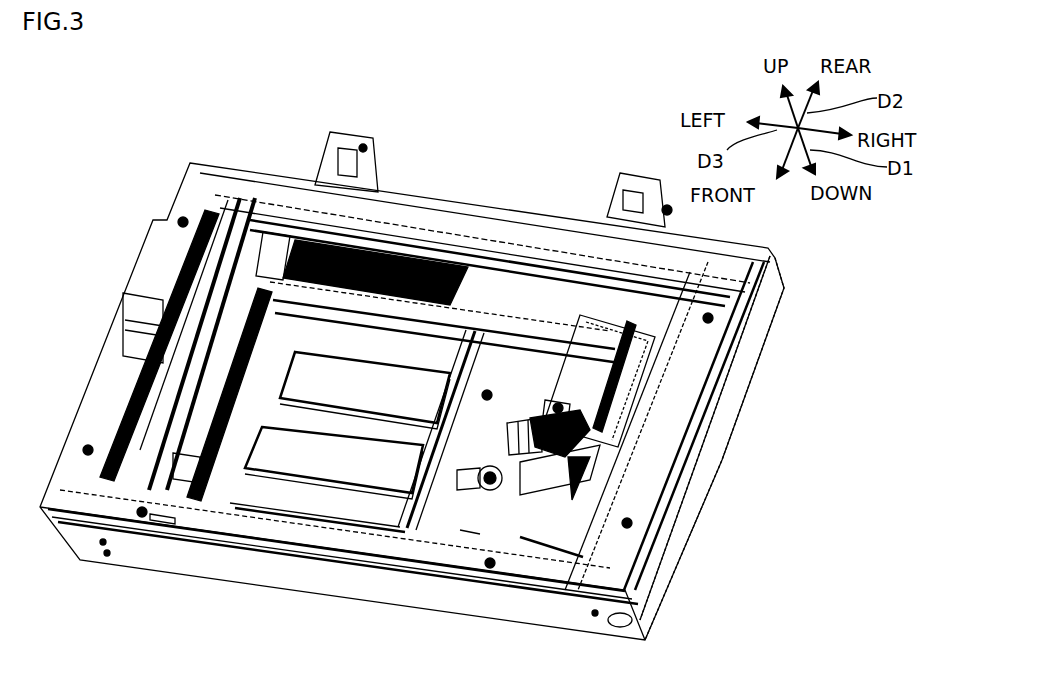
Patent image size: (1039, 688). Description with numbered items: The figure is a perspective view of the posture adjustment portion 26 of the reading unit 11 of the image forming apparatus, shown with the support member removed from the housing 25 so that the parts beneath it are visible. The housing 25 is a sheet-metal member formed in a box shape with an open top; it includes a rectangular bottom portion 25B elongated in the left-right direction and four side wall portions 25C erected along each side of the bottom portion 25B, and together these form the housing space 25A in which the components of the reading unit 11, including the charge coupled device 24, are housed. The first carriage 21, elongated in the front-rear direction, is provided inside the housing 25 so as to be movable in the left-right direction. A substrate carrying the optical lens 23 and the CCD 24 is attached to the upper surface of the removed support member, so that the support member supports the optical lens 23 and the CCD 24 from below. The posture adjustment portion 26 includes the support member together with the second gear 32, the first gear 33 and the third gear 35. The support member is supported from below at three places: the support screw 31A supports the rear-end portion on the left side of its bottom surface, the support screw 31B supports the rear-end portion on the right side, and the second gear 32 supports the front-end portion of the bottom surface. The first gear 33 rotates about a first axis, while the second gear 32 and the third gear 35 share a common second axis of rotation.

The reading unit 11 is at (146, 138).
The first carriage 21 is at (190, 448).
The optical lens 23 is at (523, 418).
The charge coupled device (CCD) 24 is at (590, 362).
The housing 25 is at (148, 275).
The housing space 25A is at (517, 283).
The bottom portion 25B is at (355, 428).
The side wall portions 25C is at (727, 400).
The posture adjustment portion 26 is at (472, 522).
The support screw 31A is at (483, 395).
The support screw 31B is at (557, 405).
The second gear 32 is at (505, 470).
The first gear 33 is at (468, 464).
The third gear 35 is at (503, 482).